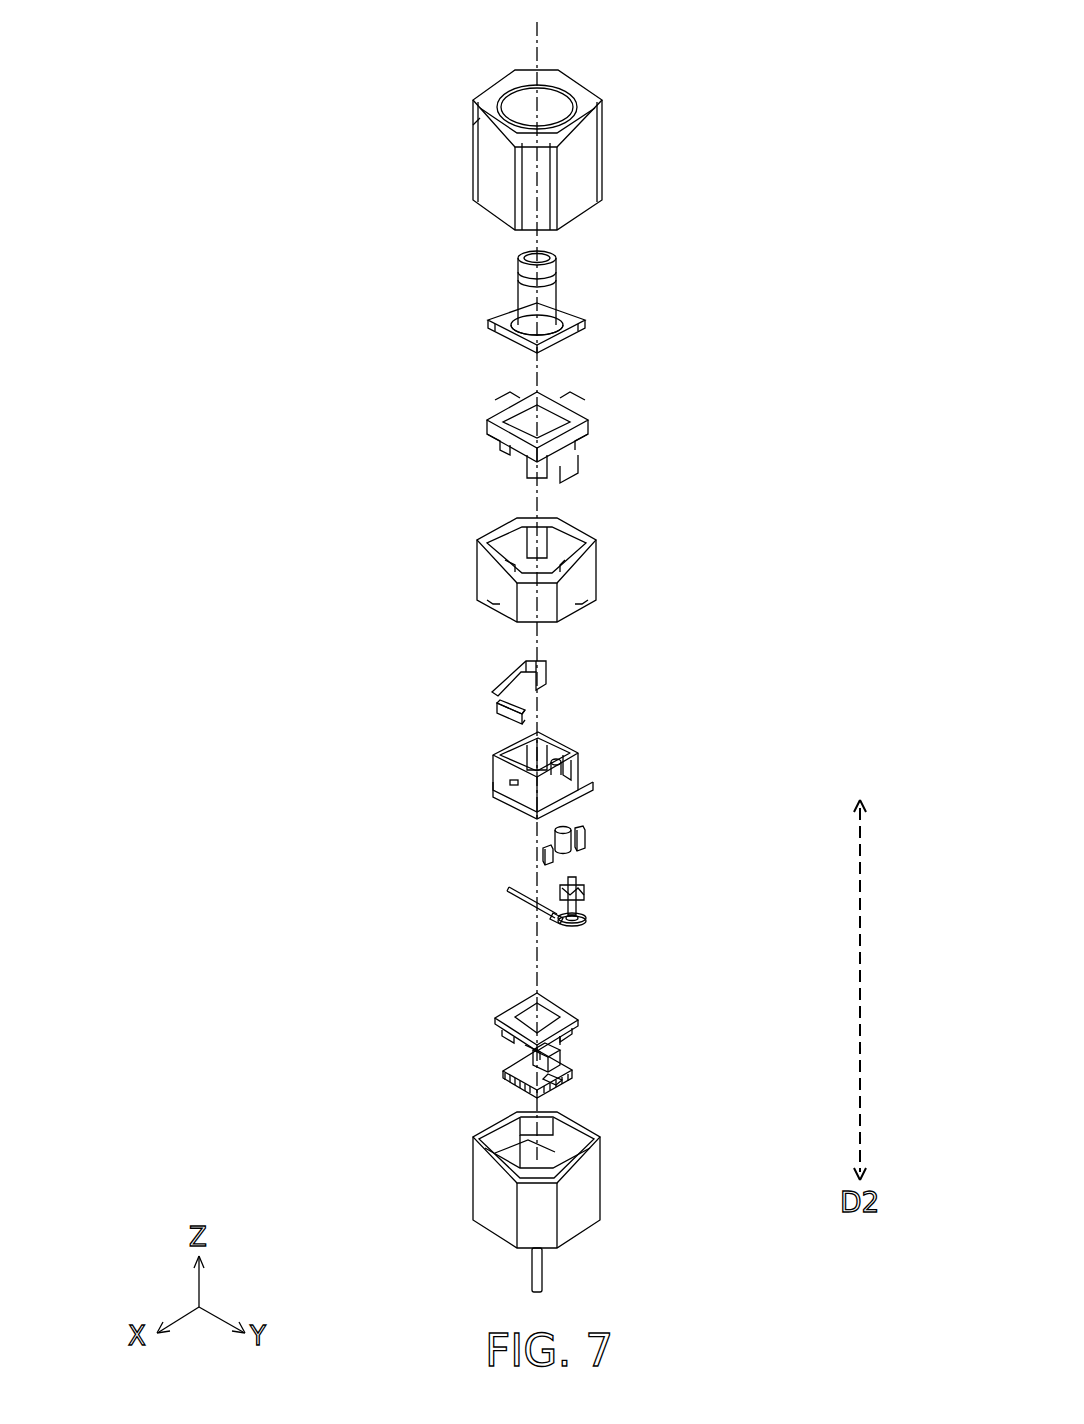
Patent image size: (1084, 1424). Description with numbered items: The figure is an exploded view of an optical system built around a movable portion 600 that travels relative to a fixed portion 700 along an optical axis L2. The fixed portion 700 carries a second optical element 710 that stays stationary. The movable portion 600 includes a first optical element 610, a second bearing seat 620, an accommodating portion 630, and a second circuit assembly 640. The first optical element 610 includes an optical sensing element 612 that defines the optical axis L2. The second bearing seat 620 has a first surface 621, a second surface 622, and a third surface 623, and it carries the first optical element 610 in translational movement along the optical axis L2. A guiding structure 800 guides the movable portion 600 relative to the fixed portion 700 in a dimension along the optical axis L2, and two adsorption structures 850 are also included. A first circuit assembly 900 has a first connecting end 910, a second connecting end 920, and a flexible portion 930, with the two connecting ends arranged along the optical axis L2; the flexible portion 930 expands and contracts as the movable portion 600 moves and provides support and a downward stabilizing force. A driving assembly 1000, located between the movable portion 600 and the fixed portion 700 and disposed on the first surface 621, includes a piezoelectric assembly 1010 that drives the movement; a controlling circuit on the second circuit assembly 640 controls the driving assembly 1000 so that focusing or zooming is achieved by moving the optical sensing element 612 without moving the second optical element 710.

The optical axis L2 is at (540, 30).
The movable portion 600 is at (186, 44).
The first optical element 610 is at (476, 992).
The optical sensing element 612 is at (518, 1000).
The second bearing seat 620 is at (522, 770).
The first surface 621 is at (571, 738).
The second surface 622 is at (577, 765).
The third surface 623 is at (551, 758).
The accommodating portion 630 is at (522, 742).
The second circuit assembly 640 is at (492, 690).
The fixed portion 700 is at (456, 160).
The second optical element 710 is at (551, 292).
The guiding structure 800 is at (615, 864).
The adsorption structure 850 is at (590, 858).
The first circuit assembly 900 is at (531, 1054).
The first connecting end 910 is at (566, 1082).
The second connecting end 920 is at (562, 1040).
The flexible portion 930 is at (562, 1052).
The driving assembly 1000 is at (639, 921).
The piezoelectric assembly 1010 is at (588, 882).